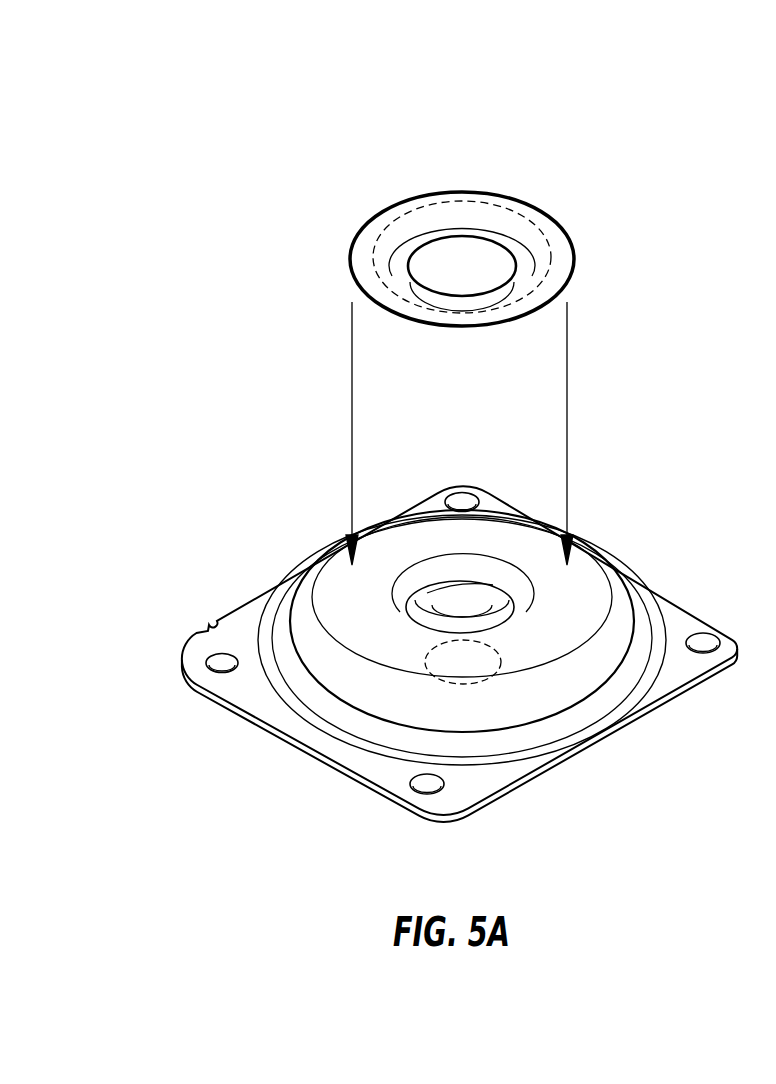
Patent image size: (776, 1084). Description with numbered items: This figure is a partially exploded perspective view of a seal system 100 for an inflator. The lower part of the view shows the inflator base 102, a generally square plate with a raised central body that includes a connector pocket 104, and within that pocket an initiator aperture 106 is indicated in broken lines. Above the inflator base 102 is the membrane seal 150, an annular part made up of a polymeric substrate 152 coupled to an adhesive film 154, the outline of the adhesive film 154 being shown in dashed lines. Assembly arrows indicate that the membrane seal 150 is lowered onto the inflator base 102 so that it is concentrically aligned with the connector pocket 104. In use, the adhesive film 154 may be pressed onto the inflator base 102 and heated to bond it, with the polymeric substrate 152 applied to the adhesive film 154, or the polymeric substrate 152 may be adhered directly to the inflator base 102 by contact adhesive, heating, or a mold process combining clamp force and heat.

The seal system 100 is at (264, 157).
The inflator base 102 is at (316, 580).
The connector pocket 104 is at (435, 577).
The initiator aperture 106 is at (480, 686).
The membrane seal 150 is at (540, 211).
The polymeric substrate 152 is at (427, 228).
The adhesive film 154 is at (555, 281).